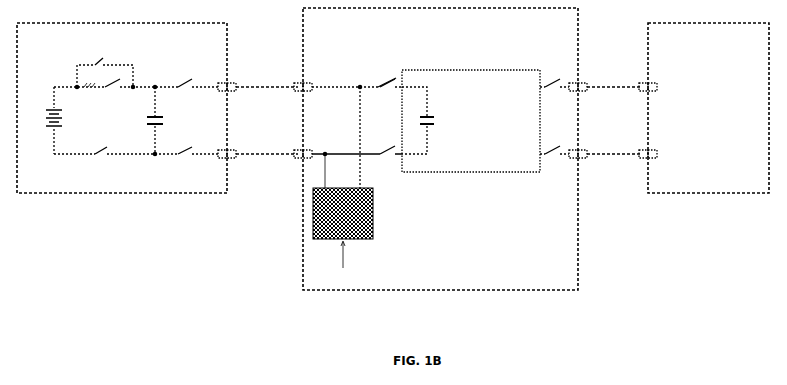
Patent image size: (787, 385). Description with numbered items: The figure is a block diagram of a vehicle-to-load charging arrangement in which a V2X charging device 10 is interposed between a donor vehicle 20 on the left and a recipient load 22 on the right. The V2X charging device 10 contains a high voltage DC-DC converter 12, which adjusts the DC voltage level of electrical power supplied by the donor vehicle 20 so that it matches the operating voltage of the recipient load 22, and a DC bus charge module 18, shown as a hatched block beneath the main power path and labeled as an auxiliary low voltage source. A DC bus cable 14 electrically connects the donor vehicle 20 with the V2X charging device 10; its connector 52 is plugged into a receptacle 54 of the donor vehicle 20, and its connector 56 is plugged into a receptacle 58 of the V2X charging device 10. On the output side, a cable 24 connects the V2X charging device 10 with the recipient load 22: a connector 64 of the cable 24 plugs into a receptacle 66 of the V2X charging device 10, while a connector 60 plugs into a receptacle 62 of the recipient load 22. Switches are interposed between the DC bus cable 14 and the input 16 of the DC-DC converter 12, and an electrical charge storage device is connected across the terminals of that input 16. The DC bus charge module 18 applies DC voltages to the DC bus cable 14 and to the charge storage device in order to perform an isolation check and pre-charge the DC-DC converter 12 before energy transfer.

The V2X charging device 10 is at (440, 149).
The DC-DC converter 12 is at (471, 121).
The DC bus cable 14 is at (263, 78).
The input 16 is at (396, 72).
The DC bus charge module 18 is at (373, 226).
The donor vehicle 20 is at (122, 108).
The recipient load 22 is at (708, 108).
The cable 24 is at (618, 78).
The connector 52 is at (231, 83).
The receptacle 54 is at (222, 83).
The connector 56 is at (298, 83).
The receptacle 58 is at (307, 83).
The connector 60 is at (643, 83).
The receptacle 62 is at (652, 83).
The connector 64 is at (582, 83).
The receptacle 66 is at (573, 83).